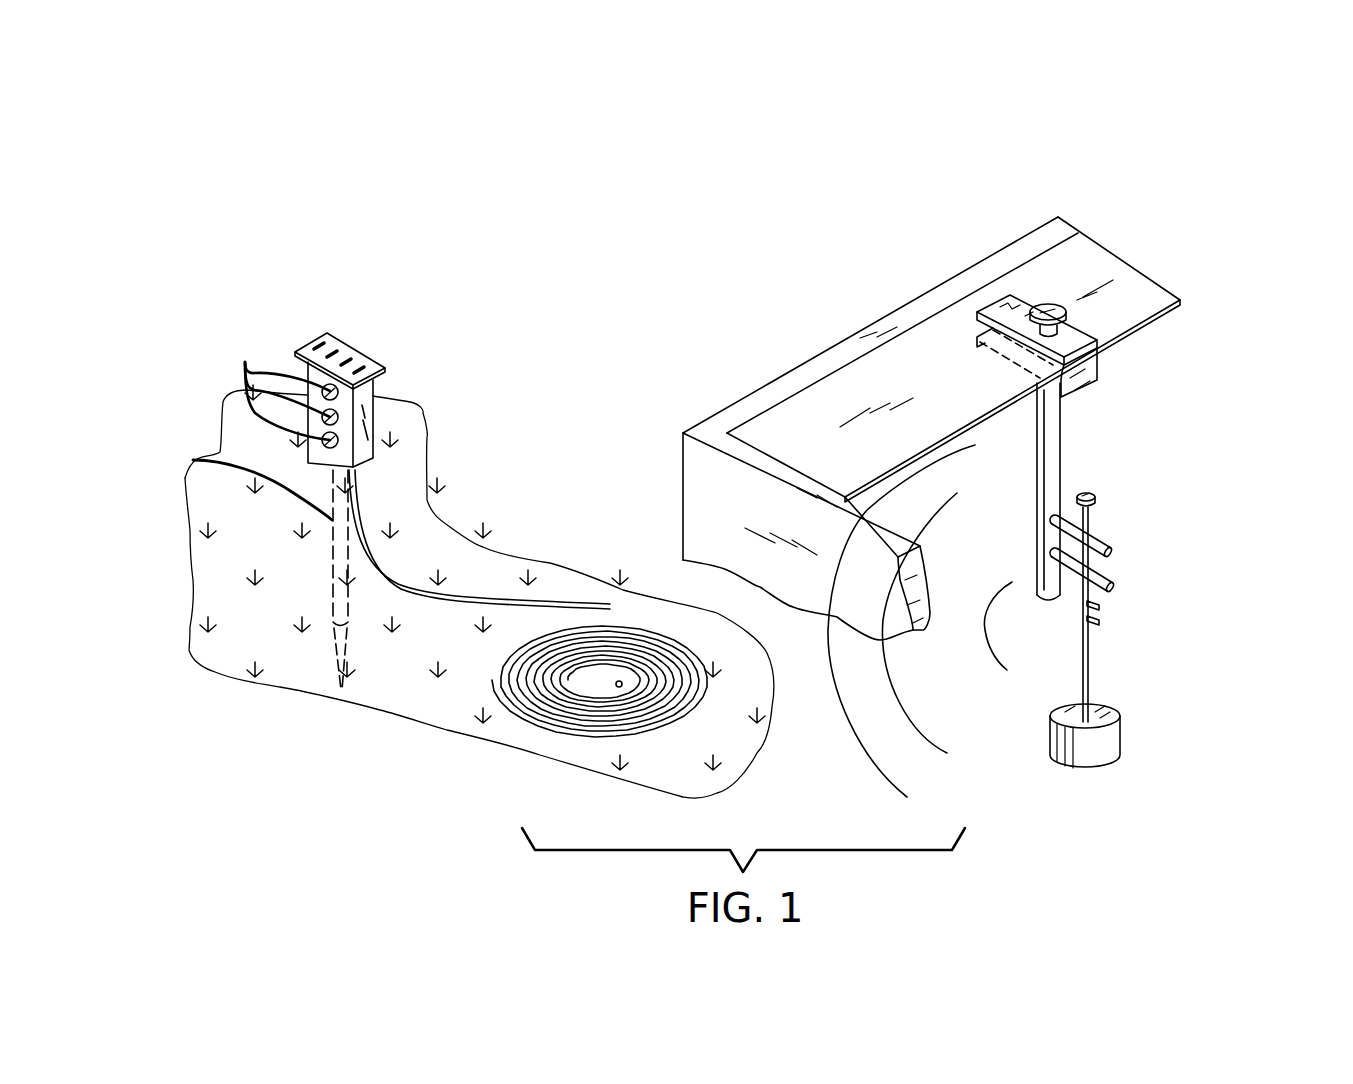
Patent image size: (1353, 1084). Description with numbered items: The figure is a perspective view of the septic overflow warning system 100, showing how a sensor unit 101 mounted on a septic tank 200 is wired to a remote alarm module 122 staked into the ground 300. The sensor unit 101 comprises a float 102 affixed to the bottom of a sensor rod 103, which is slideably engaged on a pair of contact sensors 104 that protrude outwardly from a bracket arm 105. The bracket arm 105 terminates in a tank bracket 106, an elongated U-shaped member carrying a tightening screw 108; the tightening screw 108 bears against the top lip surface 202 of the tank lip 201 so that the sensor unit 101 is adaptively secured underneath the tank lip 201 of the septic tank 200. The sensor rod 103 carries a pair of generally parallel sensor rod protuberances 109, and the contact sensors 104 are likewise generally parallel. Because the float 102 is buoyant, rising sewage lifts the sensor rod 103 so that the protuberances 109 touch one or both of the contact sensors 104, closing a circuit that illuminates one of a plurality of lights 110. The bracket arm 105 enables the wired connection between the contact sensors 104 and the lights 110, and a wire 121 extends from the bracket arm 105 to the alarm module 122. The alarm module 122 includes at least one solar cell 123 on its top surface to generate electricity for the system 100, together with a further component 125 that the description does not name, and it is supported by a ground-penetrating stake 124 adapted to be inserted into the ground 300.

The septic overflow warning system 100 is at (628, 203).
The sensor unit 101 is at (1224, 391).
The float 102 is at (1120, 738).
The sensor rod 103 is at (1092, 672).
The pair of contact sensors 104 is at (1120, 588).
The bracket arm 105 is at (1057, 445).
The tank bracket 106 is at (1097, 373).
The tightening screw 108 is at (1047, 306).
The pair of sensor rod protuberances 109 is at (1100, 608).
The plurality of lights 110 is at (274, 384).
The wire 121 is at (500, 600).
The alarm module 122 is at (296, 324).
The solar cell 123 is at (341, 347).
The ground-penetrating stake 124 is at (212, 459).
The housing 125 is at (378, 380).
The septic tank 200 is at (683, 485).
The tank lip 201 is at (1145, 262).
The top lip surface 202 is at (1084, 260).
The ground 300 is at (192, 575).